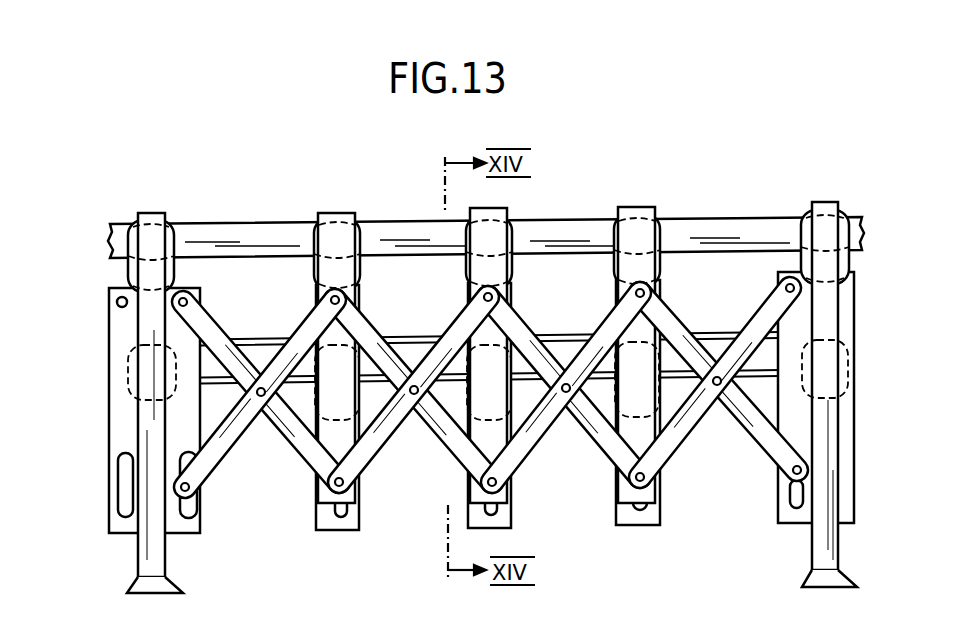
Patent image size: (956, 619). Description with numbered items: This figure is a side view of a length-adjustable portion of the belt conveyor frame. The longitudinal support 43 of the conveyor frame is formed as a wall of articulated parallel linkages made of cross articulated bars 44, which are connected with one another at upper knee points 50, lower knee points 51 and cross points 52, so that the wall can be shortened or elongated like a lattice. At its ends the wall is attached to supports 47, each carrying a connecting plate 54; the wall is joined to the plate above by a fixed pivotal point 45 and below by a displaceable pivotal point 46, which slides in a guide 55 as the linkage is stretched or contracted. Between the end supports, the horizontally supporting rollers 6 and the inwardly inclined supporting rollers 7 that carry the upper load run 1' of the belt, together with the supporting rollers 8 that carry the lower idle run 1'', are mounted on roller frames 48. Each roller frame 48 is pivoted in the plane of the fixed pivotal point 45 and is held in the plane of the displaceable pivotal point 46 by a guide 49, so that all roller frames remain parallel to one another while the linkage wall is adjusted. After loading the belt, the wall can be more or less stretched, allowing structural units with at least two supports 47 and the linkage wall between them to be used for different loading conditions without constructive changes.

The load run 1' is at (486, 206).
The idle run 1'' is at (507, 308).
The horizontally supporting rollers 6 is at (662, 287).
The inwardly inclined supporting rollers 7 is at (665, 238).
The supporting rollers 8 is at (666, 368).
The longitudinal support 43 is at (489, 437).
The cross articulated bars 44 is at (375, 443).
The fixed pivotal point 45 is at (198, 296).
The displaceable pivotal point 46 is at (200, 493).
The supports 47 is at (160, 540).
The roller frame 48 is at (362, 286).
The guide 49 is at (358, 503).
The upper knee points 50 is at (512, 305).
The lower knee points 51 is at (503, 483).
The cross points 52 is at (567, 397).
The connecting plates 54 is at (786, 502).
The guide 55 is at (200, 513).